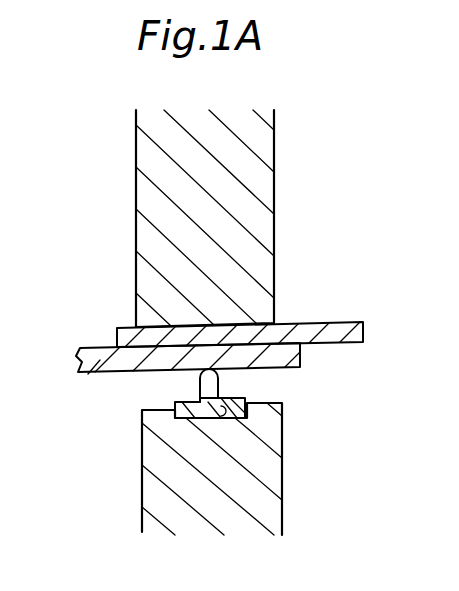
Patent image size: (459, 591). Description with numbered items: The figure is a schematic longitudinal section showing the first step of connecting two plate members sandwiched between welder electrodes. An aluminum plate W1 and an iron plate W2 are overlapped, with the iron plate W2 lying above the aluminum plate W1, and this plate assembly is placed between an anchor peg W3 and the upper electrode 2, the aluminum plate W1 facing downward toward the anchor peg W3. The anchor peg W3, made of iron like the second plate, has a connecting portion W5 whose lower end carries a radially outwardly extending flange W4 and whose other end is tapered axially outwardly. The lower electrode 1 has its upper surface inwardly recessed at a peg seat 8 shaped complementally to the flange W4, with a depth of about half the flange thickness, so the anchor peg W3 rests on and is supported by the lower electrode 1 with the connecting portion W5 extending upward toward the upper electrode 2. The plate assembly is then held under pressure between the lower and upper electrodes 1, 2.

The lower electrode 1 is at (283, 476).
The upper electrode 2 is at (275, 198).
The peg seat 8 is at (283, 428).
The aluminum plate W1 is at (90, 374).
The iron plate W2 is at (334, 322).
The anchor peg W3 is at (172, 396).
The flange W4 is at (226, 406).
The connecting portion W5 is at (223, 379).